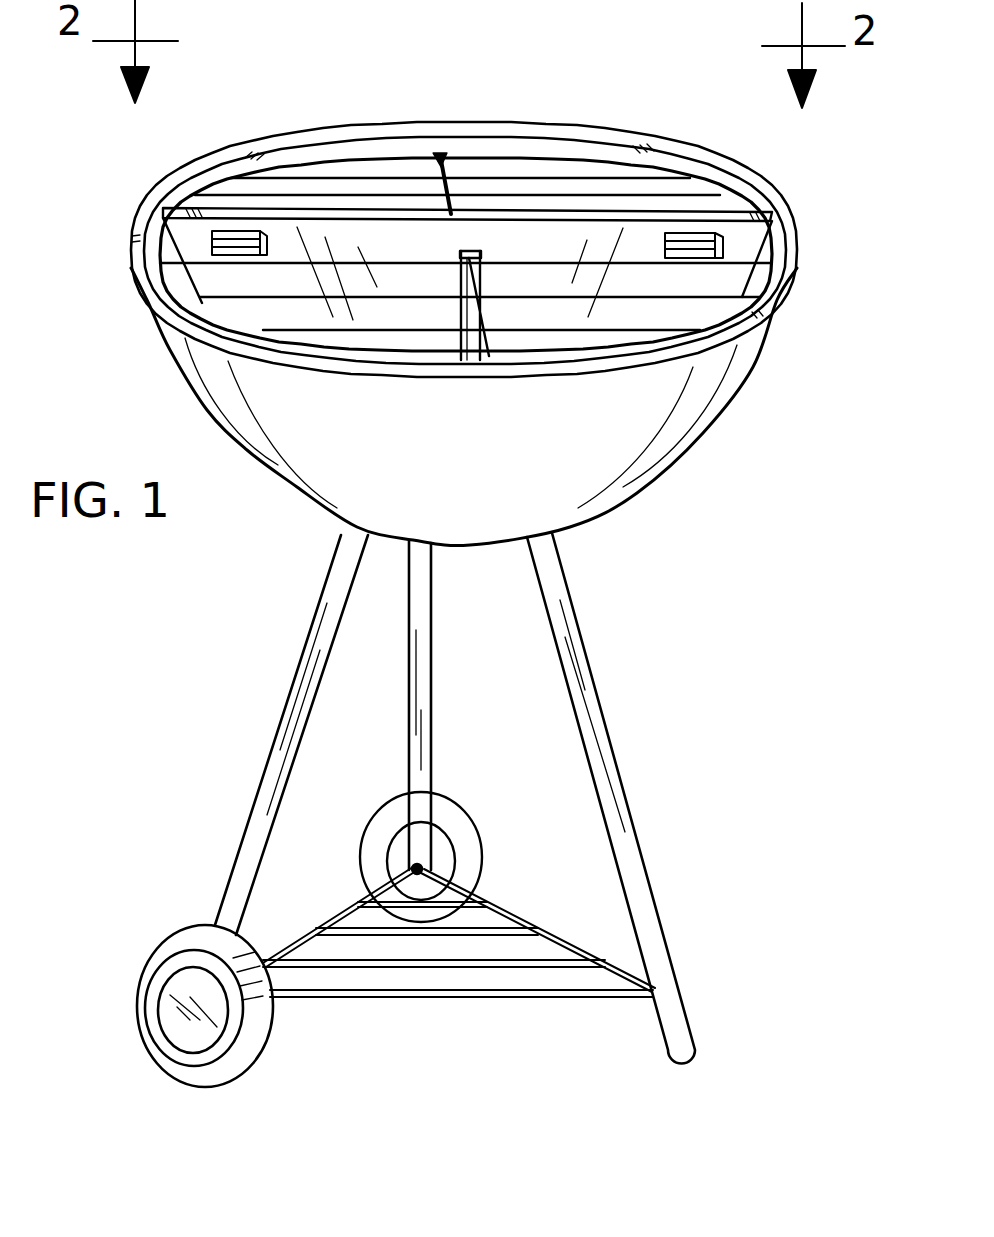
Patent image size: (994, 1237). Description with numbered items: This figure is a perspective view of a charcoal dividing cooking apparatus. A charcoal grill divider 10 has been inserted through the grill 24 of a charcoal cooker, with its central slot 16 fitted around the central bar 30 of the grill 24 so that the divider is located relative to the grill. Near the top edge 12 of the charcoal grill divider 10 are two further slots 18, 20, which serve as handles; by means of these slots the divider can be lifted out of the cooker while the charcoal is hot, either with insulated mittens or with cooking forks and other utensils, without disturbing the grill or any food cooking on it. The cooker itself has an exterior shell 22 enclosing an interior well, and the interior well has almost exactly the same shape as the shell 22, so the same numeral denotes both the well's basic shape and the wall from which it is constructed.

The charcoal grill divider 10 is at (215, 272).
The top edge 12 is at (737, 212).
The central slot 16 is at (477, 250).
The slot 18 is at (242, 232).
The slot 20 is at (723, 255).
The shell 22 is at (743, 360).
The grill 24 is at (573, 165).
The central bar 30 is at (441, 158).